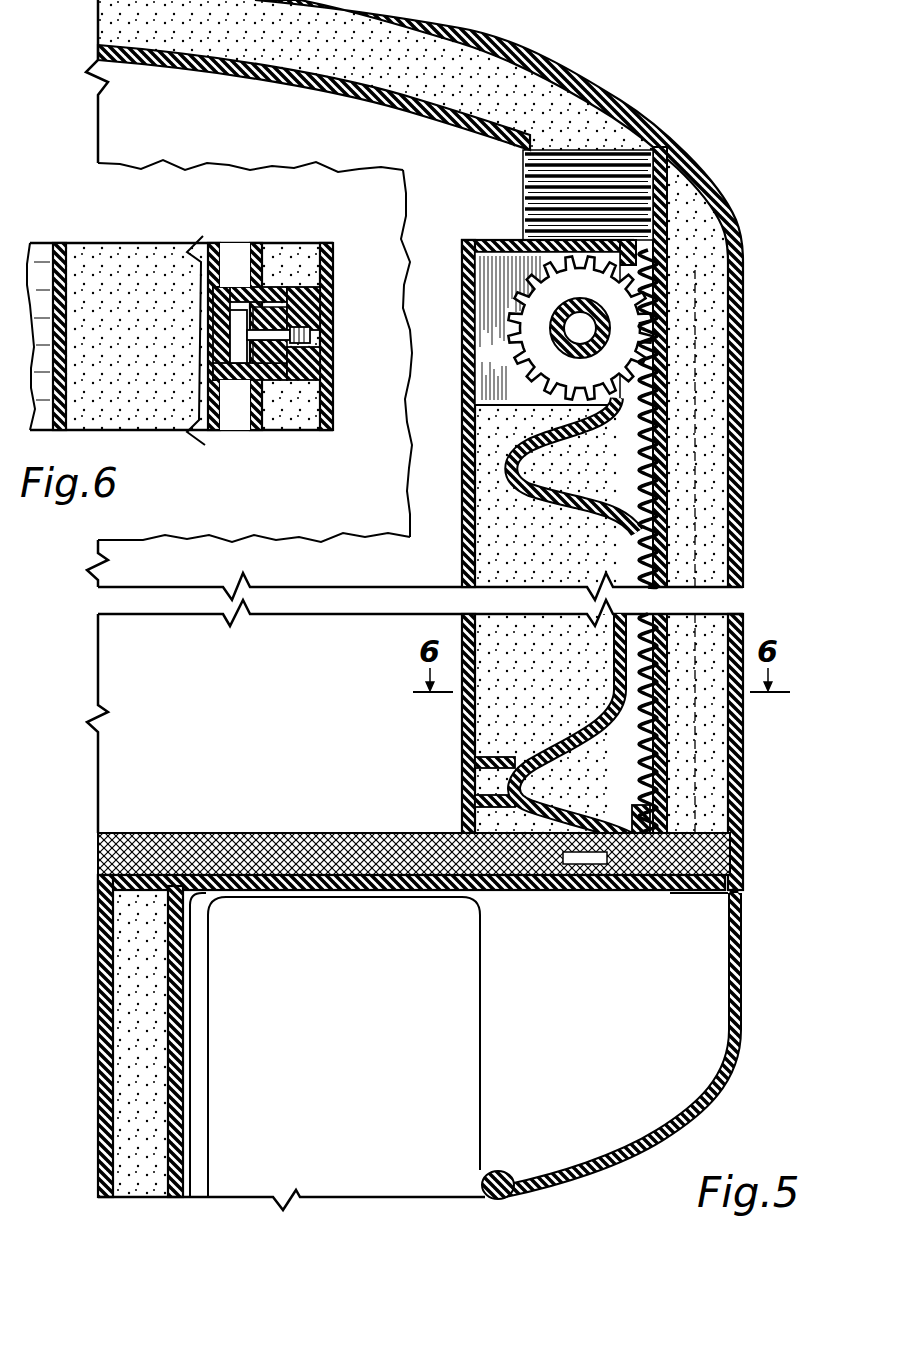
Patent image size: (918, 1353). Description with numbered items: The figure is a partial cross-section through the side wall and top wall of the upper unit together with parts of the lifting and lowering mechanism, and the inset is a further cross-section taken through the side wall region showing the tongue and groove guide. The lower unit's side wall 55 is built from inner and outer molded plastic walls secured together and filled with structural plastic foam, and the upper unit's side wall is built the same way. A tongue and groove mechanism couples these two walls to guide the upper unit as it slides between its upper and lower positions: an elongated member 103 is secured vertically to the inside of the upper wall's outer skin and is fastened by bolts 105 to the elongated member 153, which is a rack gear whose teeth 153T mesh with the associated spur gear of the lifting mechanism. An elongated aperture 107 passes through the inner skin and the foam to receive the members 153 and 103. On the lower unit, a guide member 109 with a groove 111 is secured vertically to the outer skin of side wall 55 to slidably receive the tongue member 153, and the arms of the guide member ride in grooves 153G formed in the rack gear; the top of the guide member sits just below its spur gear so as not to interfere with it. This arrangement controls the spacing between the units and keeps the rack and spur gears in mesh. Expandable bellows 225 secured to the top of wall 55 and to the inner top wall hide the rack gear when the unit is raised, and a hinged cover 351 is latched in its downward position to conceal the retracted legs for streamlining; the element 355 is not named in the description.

In FIG. 5, the bellows 225 is at (598, 163).
In FIG. 5, the side wall 55 is at (462, 272).
In FIG. 5, the rack gear 153 is at (650, 563).
In FIG. 6, the rack gear 153 is at (280, 300).
In FIG. 5, the teeth of rack gear 153T is at (647, 478).
In FIG. 6, the teeth of rack gear 153T is at (240, 345).
In FIG. 5, the container top wall 355 is at (735, 893).
In FIG. 5, the cover 351 is at (737, 1017).
In FIG. 6, the guide member 109 is at (240, 300).
In FIG. 6, the grooves 153G is at (235, 321).
In FIG. 6, the elongated member 103 is at (265, 318).
In FIG. 6, the bolts 105 is at (293, 353).
In FIG. 6, the elongated aperture 107 is at (277, 378).
In FIG. 6, the groove 111 is at (243, 408).